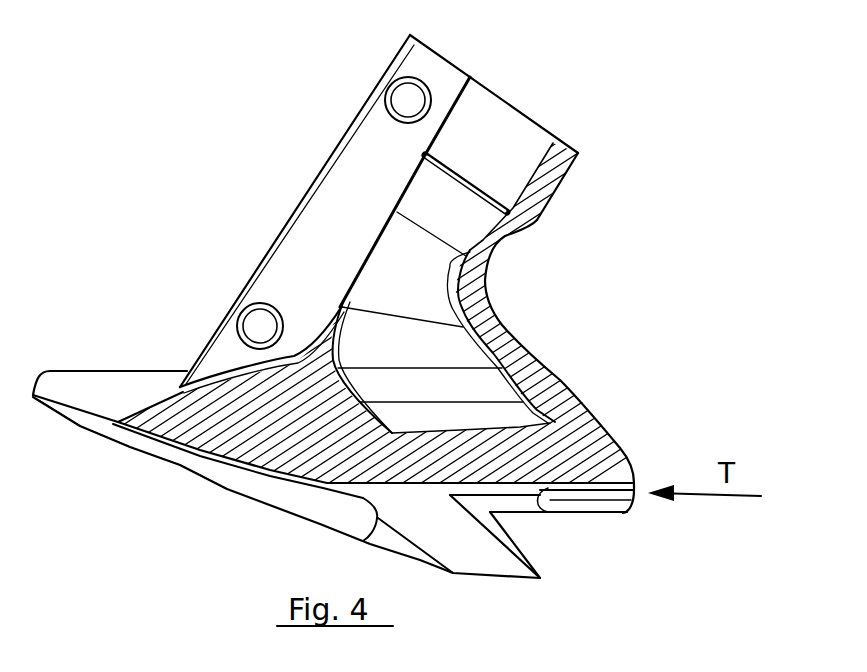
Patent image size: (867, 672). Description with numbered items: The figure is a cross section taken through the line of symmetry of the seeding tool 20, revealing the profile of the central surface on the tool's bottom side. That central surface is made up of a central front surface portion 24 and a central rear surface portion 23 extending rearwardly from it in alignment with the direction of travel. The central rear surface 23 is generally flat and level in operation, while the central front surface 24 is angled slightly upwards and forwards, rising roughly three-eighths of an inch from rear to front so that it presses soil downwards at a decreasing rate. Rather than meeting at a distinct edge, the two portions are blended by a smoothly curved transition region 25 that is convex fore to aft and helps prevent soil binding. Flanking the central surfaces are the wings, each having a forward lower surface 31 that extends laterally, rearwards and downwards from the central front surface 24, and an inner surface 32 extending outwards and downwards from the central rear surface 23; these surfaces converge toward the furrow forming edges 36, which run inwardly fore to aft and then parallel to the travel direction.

The seeding tool 20 is at (166, 122).
The central rear surface portion 23 is at (491, 514).
The central front surface portion 24 is at (150, 453).
The smoothly curved transition region 25 is at (363, 541).
The forward lower surface 31 is at (323, 507).
The inner surface 32 is at (493, 560).
The furrow forming edges 36 is at (223, 486).